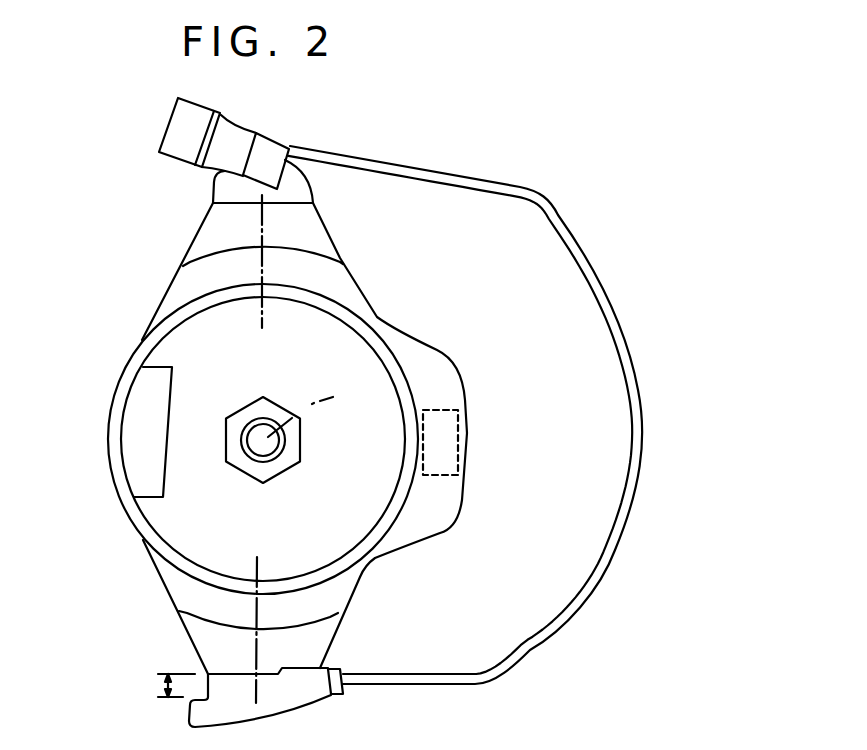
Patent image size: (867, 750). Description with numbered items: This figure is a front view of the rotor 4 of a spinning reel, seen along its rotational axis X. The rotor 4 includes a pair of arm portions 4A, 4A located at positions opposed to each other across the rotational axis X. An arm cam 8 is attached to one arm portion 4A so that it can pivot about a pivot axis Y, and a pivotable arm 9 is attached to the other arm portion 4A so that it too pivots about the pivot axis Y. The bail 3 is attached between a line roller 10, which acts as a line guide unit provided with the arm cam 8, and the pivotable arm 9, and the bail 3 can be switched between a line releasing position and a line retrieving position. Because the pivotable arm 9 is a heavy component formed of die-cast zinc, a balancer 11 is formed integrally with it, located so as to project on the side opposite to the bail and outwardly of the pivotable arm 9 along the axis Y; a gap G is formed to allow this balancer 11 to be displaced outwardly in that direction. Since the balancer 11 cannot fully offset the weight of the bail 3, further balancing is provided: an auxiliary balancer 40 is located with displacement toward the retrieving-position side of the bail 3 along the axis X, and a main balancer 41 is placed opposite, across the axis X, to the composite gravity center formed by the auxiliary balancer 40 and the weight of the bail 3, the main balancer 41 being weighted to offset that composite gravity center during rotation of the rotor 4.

The bail 3 is at (470, 189).
The rotor 4 is at (124, 511).
The arm portion 4A is at (200, 237).
The arm cam 8 is at (227, 187).
The pivotable arm 9 is at (312, 695).
The line roller 10 is at (240, 140).
The balancer 11 is at (193, 716).
The auxiliary balancer 40 is at (443, 410).
The main balancer 41 is at (136, 416).
The gap G is at (160, 675).
The rotational axis X is at (312, 407).
The pivot axis Y is at (258, 449).